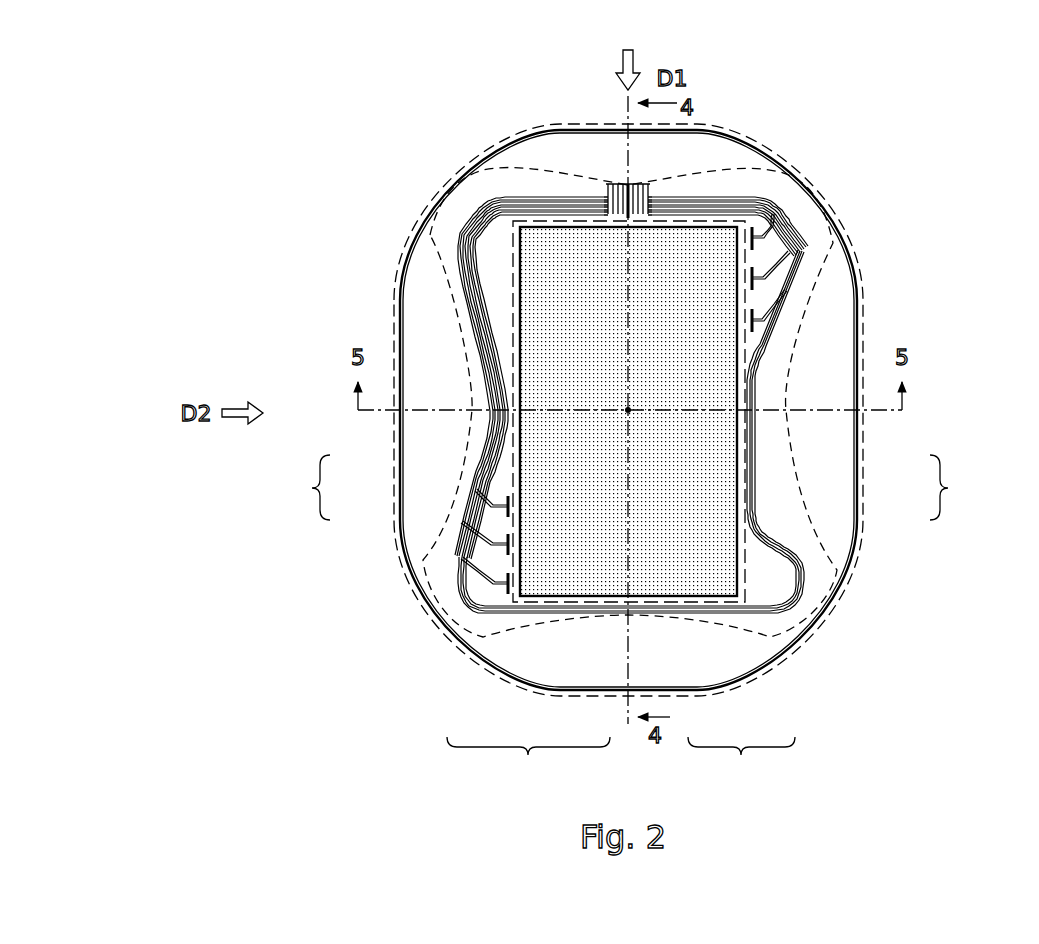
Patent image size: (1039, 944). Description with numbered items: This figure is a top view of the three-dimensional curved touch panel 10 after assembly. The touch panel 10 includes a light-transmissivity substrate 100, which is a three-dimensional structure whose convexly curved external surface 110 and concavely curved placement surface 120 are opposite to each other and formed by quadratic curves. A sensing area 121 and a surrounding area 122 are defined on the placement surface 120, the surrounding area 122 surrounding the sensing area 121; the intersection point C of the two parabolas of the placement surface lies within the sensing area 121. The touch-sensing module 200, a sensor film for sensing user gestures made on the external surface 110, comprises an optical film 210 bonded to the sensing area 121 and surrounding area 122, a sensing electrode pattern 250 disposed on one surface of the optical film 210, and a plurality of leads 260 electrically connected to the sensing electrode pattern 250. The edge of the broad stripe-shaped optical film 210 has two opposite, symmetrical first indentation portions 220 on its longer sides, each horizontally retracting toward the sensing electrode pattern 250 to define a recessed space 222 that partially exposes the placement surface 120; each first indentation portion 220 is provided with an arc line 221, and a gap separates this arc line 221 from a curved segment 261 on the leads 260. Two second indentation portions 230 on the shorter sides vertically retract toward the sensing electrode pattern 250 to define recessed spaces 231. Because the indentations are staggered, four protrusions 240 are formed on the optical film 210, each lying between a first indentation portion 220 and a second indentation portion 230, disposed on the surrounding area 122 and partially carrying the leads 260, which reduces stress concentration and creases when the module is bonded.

The three-dimensional curved touch panel 10 is at (996, 77).
The light-transmissivity substrate 100 is at (606, 455).
The external surface 110 is at (712, 672).
The placement surface 120 is at (606, 433).
The sensing area 121 is at (515, 220).
The surrounding area 122 is at (436, 204).
The touch-sensing module 200 is at (592, 504).
The optical film 210 is at (573, 617).
The first indentation portions 220 is at (630, 377).
The arc line 221 is at (730, 170).
The recessed space 222 is at (426, 467).
The second indentation portions 230 is at (539, 166).
The recessed space 231 is at (703, 148).
The protrusions 240 is at (436, 233).
The sensing electrode pattern 250 is at (535, 580).
The leads 260 is at (480, 580).
The curved segment 261 is at (492, 424).
The intersection point C is at (630, 408).